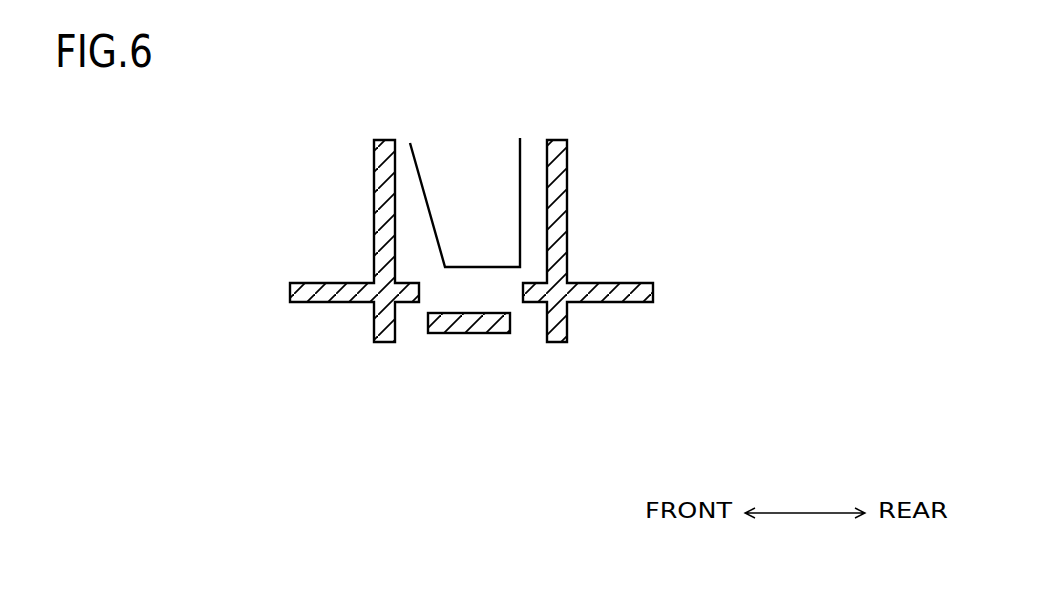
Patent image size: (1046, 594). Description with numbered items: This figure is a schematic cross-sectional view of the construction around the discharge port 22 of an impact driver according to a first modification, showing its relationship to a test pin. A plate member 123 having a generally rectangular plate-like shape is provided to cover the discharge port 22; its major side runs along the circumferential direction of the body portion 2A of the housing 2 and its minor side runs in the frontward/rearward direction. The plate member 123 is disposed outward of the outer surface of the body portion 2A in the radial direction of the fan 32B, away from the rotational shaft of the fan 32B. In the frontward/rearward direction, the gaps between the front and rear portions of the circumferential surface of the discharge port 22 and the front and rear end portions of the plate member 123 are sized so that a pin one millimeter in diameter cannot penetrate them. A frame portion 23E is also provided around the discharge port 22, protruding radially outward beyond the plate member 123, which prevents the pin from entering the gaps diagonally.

The housing 2 is at (300, 241).
The body portion 2A is at (302, 293).
The discharge port 22 is at (503, 292).
The frame portion 23E is at (567, 318).
The fan 32B is at (443, 170).
The plate member 123 is at (451, 322).